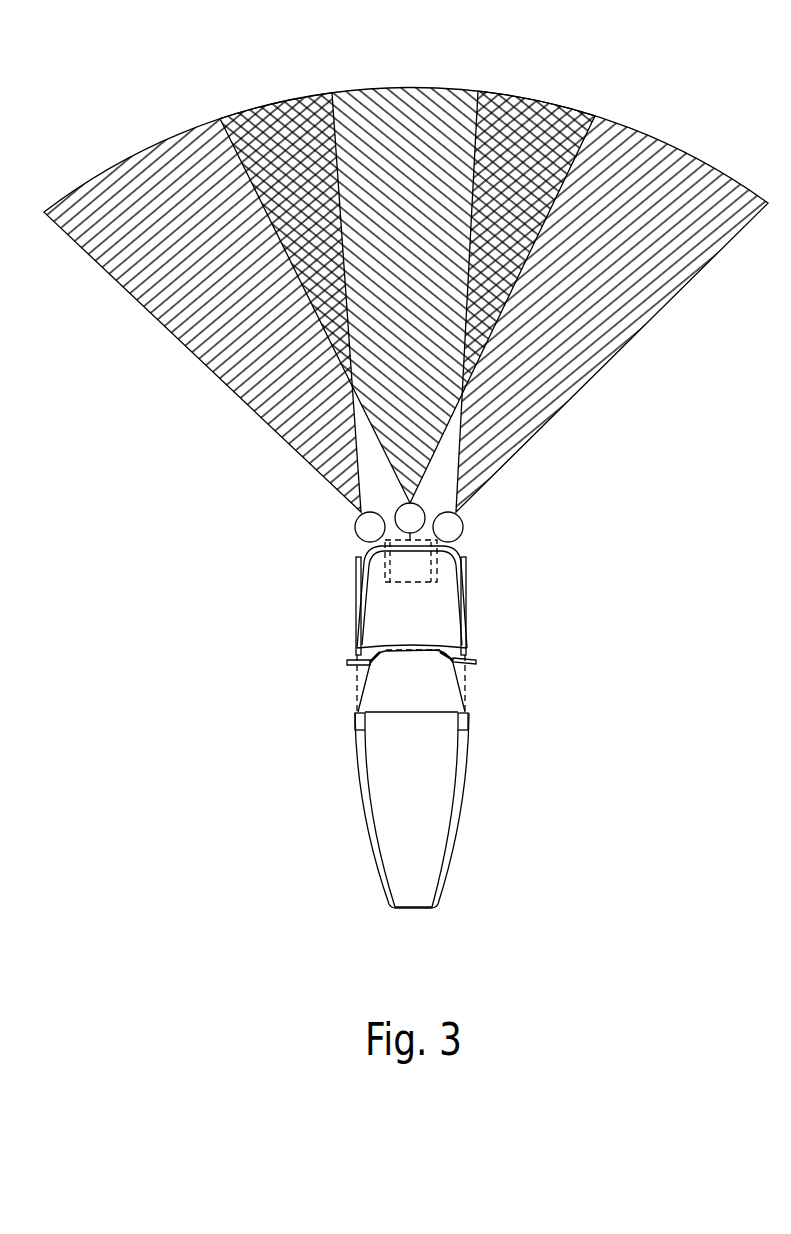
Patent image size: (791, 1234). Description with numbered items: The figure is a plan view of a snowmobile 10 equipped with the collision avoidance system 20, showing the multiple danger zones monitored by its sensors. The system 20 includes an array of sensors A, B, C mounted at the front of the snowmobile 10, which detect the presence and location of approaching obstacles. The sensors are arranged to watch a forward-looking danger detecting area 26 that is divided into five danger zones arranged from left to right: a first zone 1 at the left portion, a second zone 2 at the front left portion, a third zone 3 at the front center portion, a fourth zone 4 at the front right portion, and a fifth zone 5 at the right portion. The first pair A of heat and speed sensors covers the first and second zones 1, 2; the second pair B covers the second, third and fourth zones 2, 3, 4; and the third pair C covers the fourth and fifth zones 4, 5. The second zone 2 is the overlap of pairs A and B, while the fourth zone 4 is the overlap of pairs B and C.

The snowmobile 10 is at (345, 863).
The collision avoidance system 20 is at (357, 548).
The forward-looking danger detecting area 26 is at (402, 80).
The first zone 1 is at (141, 219).
The second zone 2 is at (282, 154).
The third zone 3 is at (406, 129).
The fourth zone 4 is at (525, 154).
The fifth zone 5 is at (667, 214).